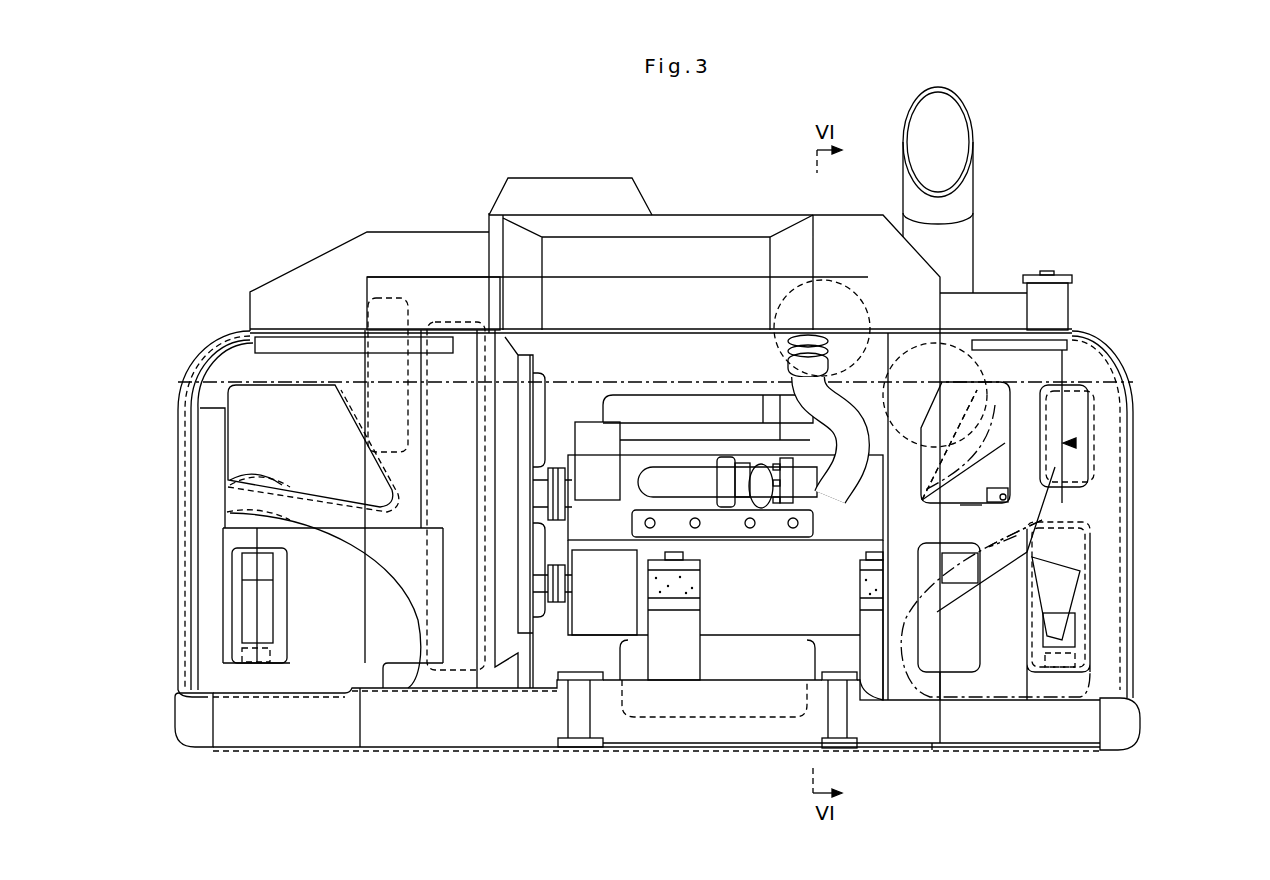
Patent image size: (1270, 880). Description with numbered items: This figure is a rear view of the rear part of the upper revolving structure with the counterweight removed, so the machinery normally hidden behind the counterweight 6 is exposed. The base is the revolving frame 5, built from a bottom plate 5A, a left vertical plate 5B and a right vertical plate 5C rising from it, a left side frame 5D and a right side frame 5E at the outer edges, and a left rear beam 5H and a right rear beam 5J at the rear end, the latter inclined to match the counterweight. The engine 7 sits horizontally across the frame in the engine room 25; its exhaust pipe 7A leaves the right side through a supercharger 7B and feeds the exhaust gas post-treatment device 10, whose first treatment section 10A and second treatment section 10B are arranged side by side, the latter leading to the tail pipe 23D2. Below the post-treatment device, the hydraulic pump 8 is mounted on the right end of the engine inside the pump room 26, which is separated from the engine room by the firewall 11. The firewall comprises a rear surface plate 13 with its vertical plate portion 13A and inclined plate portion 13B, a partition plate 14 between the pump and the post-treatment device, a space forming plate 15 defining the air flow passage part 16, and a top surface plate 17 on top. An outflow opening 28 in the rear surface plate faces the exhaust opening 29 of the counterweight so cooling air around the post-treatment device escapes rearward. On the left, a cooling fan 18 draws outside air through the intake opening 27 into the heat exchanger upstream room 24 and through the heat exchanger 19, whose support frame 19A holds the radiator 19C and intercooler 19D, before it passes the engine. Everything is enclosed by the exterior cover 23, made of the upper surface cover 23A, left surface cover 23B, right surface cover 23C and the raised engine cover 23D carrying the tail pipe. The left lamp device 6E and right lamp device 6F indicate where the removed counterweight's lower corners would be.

The revolving frame 5 is at (627, 747).
The bottom plate 5A is at (672, 745).
The left vertical plate 5B is at (578, 728).
The right vertical plate 5C is at (833, 727).
The left side frame 5D is at (195, 718).
The right side frame 5E is at (1118, 724).
The left rear beam 5H is at (335, 727).
The right rear beam 5J is at (983, 733).
The counterweight 6 is at (178, 562).
The left lamp device 6E is at (230, 583).
The right lamp device 6F is at (1075, 625).
The engine 7 is at (724, 597).
The exhaust pipe 7A is at (825, 480).
The supercharger 7B is at (760, 497).
The hydraulic pump 8 is at (1055, 578).
The exhaust gas post-treatment device 10 is at (952, 397).
The first treatment section 10A is at (790, 297).
The second treatment section 10B is at (923, 497).
The firewall 11 is at (1076, 443).
The rear surface plate 13 is at (1032, 505).
The vertical plate portion 13A is at (908, 677).
The inclined plate portion 13B is at (1018, 535).
The partition plate 14 is at (985, 410).
The space forming plate 15 is at (1055, 467).
The air flow passage part 16 is at (949, 445).
The top surface plate 17 is at (1045, 330).
The cooling fan 18 is at (540, 417).
The heat exchanger 19 is at (458, 645).
The support frame 19A is at (490, 613).
The radiator 19C is at (460, 325).
The intercooler 19D is at (385, 297).
The exterior cover 23 is at (705, 218).
The upper surface cover 23A is at (688, 330).
The left surface cover 23B is at (185, 425).
The right surface cover 23C is at (1130, 595).
The engine cover 23D is at (594, 222).
The tail pipe 23D2 is at (965, 195).
The heat exchanger upstream room 24 is at (265, 420).
The engine room 25 is at (635, 360).
The pump room 26 is at (1075, 648).
The intake opening 27 is at (223, 477).
The outflow opening 28 is at (983, 470).
The exhaust opening 29 is at (1030, 478).